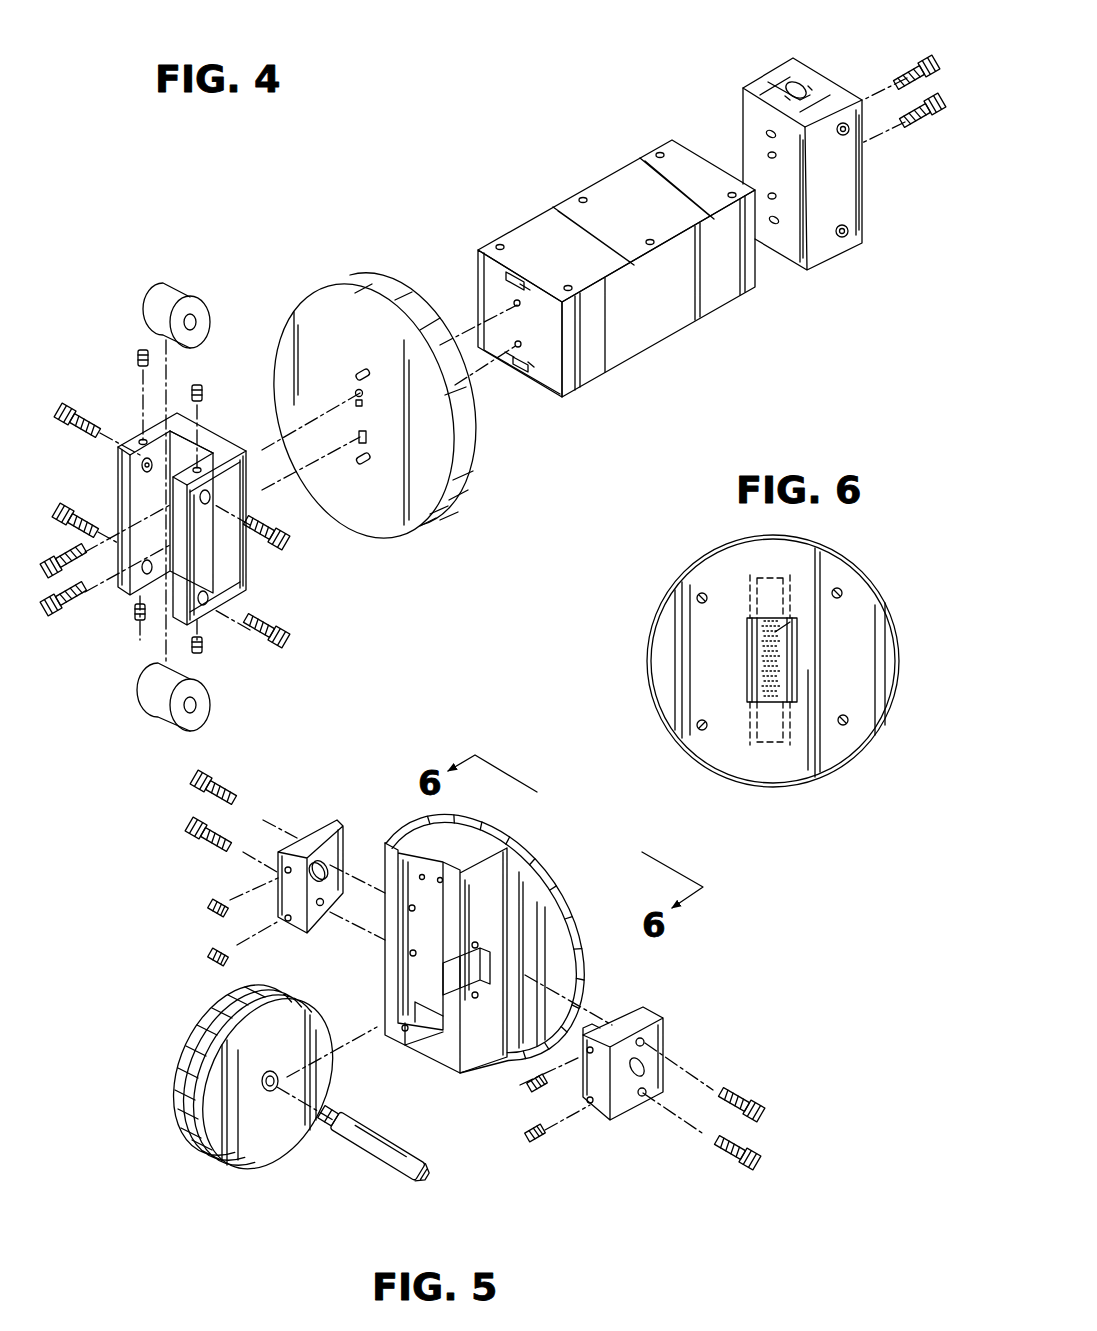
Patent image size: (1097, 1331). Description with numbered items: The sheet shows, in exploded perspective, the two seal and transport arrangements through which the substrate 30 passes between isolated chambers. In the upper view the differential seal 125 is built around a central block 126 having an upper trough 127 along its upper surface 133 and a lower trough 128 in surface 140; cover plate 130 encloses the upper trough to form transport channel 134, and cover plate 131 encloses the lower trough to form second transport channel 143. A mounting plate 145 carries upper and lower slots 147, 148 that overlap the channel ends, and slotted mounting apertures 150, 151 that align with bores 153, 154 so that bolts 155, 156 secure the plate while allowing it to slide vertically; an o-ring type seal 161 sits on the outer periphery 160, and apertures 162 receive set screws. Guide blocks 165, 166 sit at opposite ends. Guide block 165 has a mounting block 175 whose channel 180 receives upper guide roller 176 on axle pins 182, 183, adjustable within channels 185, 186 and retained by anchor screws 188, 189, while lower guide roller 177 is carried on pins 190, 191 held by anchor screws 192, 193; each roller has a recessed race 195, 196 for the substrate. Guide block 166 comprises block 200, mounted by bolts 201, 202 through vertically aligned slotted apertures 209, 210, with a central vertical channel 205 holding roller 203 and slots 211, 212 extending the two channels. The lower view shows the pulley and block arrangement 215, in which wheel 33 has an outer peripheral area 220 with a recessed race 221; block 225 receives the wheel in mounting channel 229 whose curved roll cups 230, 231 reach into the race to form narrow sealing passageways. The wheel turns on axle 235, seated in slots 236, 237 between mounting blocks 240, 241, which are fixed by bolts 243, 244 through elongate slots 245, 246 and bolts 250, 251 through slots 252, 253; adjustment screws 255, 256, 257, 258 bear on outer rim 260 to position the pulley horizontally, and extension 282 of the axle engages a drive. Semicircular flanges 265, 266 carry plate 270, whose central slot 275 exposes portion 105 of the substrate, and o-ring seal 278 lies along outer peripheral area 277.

In FIG. 4, the differential seal 125 is at (583, 280).
In FIG. 4, the central block 126 is at (583, 280).
In FIG. 4, the cover plate 130 is at (598, 200).
In FIG. 4, the cover plate 131 is at (668, 335).
In FIG. 4, the upper trough 127 is at (524, 326).
In FIG. 4, the upper surface 133 is at (506, 280).
In FIG. 4, the transport channel 134 is at (530, 290).
In FIG. 4, the bore 153 is at (514, 303).
In FIG. 4, the bore 154 is at (521, 345).
In FIG. 4, the second transport channel 143 is at (520, 372).
In FIG. 4, the lower trough 128 is at (512, 366).
In FIG. 4, the surface 140 is at (538, 378).
In FIG. 4, the second guide block 166 is at (813, 158).
In FIG. 4, the block 200 is at (771, 158).
In FIG. 4, the first roller 203 is at (815, 85).
In FIG. 4, the central vertical channel 205 is at (793, 75).
In FIG. 4, the slot 211 is at (766, 131).
In FIG. 4, the slotted aperture 209 is at (768, 155).
In FIG. 4, the slotted aperture 210 is at (775, 199).
In FIG. 4, the slot 212 is at (775, 224).
In FIG. 4, the bolt 201 is at (913, 66).
In FIG. 4, the bolt 202 is at (920, 124).
In FIG. 4, the mounting plate 145 is at (395, 403).
In FIG. 4, the outer periphery 160 is at (476, 462).
In FIG. 4, the o-ring type seal 161 is at (452, 515).
In FIG. 4, the apertures 162 is at (366, 291).
In FIG. 4, the upper slot 147 is at (358, 370).
In FIG. 4, the mounting slot 150 is at (355, 389).
In FIG. 4, the mounting slot 151 is at (367, 437).
In FIG. 4, the lower slot 148 is at (360, 463).
In FIG. 4, the first guide block 165 is at (191, 501).
In FIG. 4, the mounting block 175 is at (179, 483).
In FIG. 4, the channel 186 is at (210, 537).
In FIG. 4, the channel 185 is at (141, 455).
In FIG. 4, the channel 180 is at (178, 445).
In FIG. 4, the upper guide roller 176 is at (205, 292).
In FIG. 4, the recessed race 195 is at (190, 285).
In FIG. 4, the lower guide roller 177 is at (187, 714).
In FIG. 4, the recessed race 196 is at (152, 715).
In FIG. 4, the axle pin 182 is at (82, 408).
In FIG. 4, the pin 190 is at (77, 506).
In FIG. 4, the bolt 155 is at (53, 556).
In FIG. 4, the bolt 156 is at (76, 612).
In FIG. 4, the axle pin 183 is at (283, 532).
In FIG. 4, the pin 191 is at (284, 633).
In FIG. 4, the anchor screw 188 is at (138, 352).
In FIG. 4, the anchor screw 189 is at (203, 392).
In FIG. 4, the anchor screw 192 is at (138, 622).
In FIG. 4, the anchor screw 193 is at (205, 650).
In FIG. 6, the plate 270 is at (777, 652).
In FIG. 6, the race 221 is at (748, 578).
In FIG. 5, the race 221 is at (245, 1097).
In FIG. 6, the portion of substrate 105 is at (760, 665).
In FIG. 6, the substrate 30 is at (768, 700).
In FIG. 6, the central slot 275 is at (777, 633).
In FIG. 5, the pulley and block arrangement 215 is at (487, 964).
In FIG. 5, the block 225 is at (487, 930).
In FIG. 5, the outer peripheral area 277 is at (535, 850).
In FIG. 5, the o-ring seal 278 is at (570, 908).
In FIG. 5, the semicircular flange 265 is at (520, 883).
In FIG. 5, the roll cup 230 is at (422, 858).
In FIG. 5, the mounting channel 229 is at (408, 855).
In FIG. 5, the slot 236 is at (470, 966).
In FIG. 5, the semicircular flange 266 is at (405, 958).
In FIG. 5, the outer rim 260 is at (398, 985).
In FIG. 5, the slot 237 is at (405, 1031).
In FIG. 5, the roll cup 231 is at (430, 1050).
In FIG. 5, the mounting block 241 is at (337, 869).
In FIG. 5, the slot 252 is at (326, 852).
In FIG. 5, the slot 253 is at (320, 906).
In FIG. 5, the bolt 250 is at (242, 800).
In FIG. 5, the bolt 251 is at (190, 832).
In FIG. 5, the adjustment screw 257 is at (206, 908).
In FIG. 5, the adjustment screw 258 is at (206, 958).
In FIG. 5, the outer peripheral area 220 is at (185, 1152).
In FIG. 5, the wheel 33 is at (258, 1158).
In FIG. 5, the axle 235 is at (380, 1168).
In FIG. 5, the extension 282 is at (418, 1184).
In FIG. 5, the mounting block 240 is at (665, 1066).
In FIG. 5, the slot 245 is at (655, 1036).
In FIG. 5, the slot 246 is at (630, 1108).
In FIG. 5, the bolt 243 is at (762, 1094).
In FIG. 5, the bolt 244 is at (727, 1164).
In FIG. 5, the adjustment screw 255 is at (532, 1090).
In FIG. 5, the adjustment screw 256 is at (539, 1146).